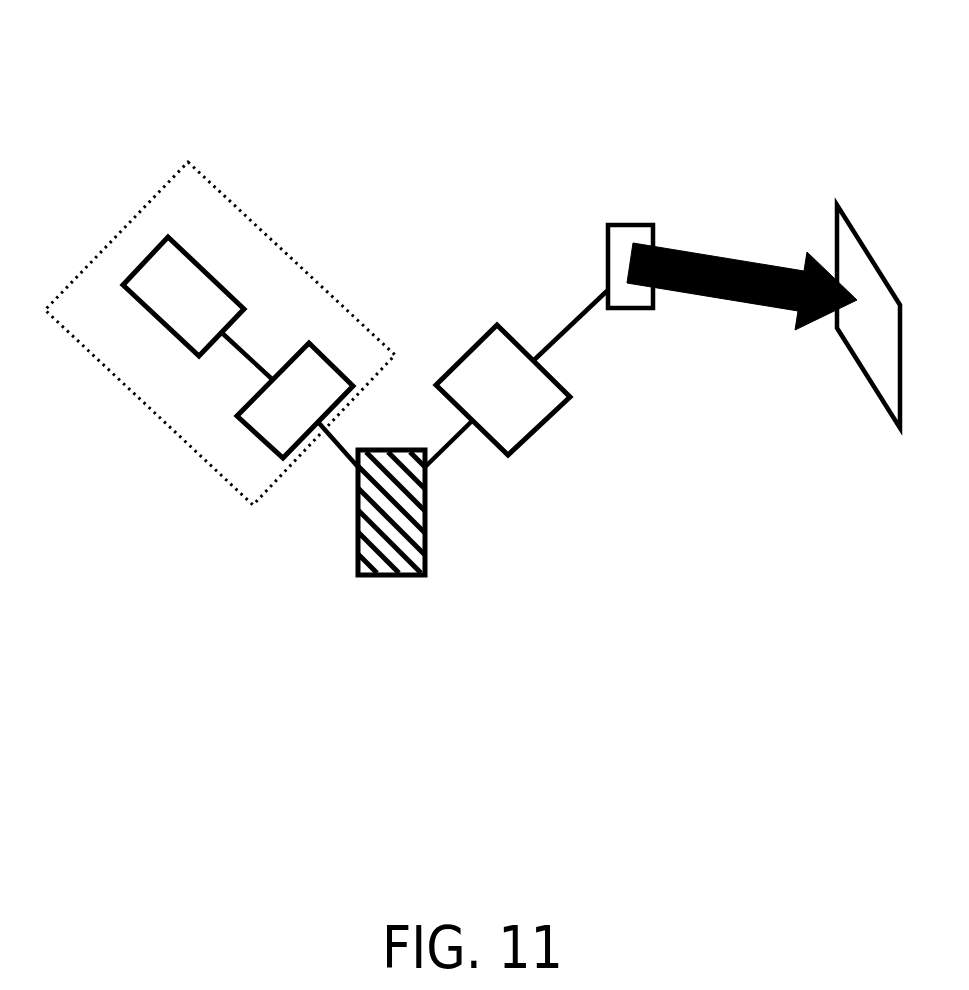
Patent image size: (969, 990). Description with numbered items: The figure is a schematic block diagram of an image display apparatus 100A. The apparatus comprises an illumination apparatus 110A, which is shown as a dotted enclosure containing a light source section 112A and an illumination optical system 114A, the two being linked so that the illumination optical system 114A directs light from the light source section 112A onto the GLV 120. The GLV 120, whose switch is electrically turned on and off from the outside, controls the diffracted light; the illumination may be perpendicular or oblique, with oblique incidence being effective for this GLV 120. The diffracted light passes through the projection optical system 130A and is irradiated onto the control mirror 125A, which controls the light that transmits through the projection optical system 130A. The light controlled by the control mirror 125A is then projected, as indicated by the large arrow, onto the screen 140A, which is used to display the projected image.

The image display apparatus 100A is at (690, 46).
The illumination apparatus 110A is at (173, 430).
The light source section 112A is at (152, 327).
The illumination optical system 114A is at (318, 390).
The GLV 120 is at (425, 533).
The control mirror 125A is at (607, 243).
The projection optical system 130A is at (547, 428).
The screen 140A is at (878, 348).